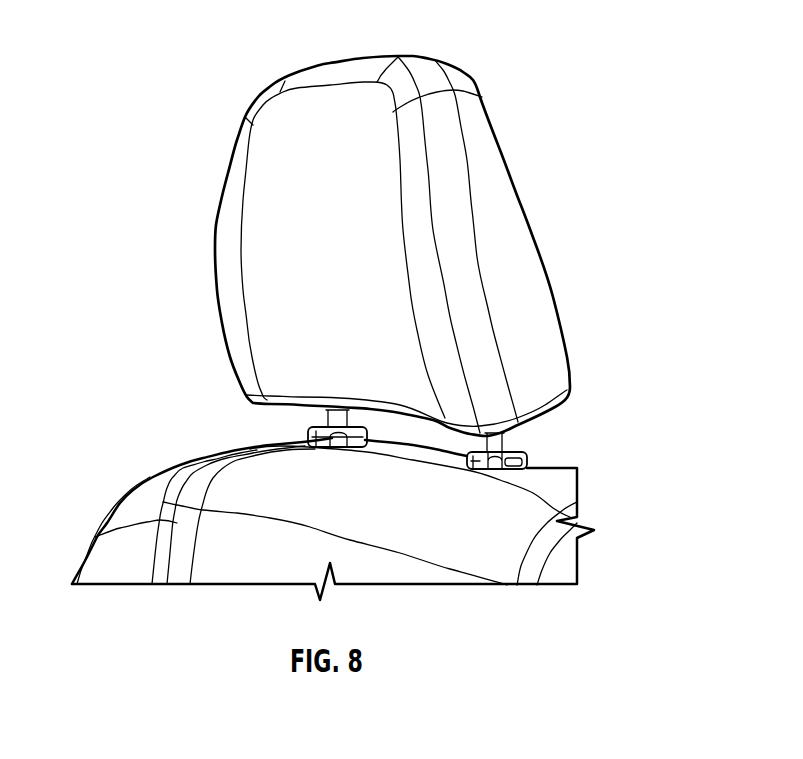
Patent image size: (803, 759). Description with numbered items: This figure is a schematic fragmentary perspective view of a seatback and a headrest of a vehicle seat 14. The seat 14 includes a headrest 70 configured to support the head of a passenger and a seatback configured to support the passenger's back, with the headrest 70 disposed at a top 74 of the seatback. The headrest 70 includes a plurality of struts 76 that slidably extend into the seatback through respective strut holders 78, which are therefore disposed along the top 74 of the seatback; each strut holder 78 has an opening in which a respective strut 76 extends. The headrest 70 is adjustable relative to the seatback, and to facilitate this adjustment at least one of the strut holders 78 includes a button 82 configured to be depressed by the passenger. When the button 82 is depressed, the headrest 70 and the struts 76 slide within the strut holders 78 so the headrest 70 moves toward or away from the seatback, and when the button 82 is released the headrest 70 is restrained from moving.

The seat 14 is at (578, 34).
The headrest 70 is at (521, 268).
The top 74 is at (280, 444).
The struts 76 is at (347, 420).
The strut holders 78 is at (315, 441).
The button 82 is at (517, 467).